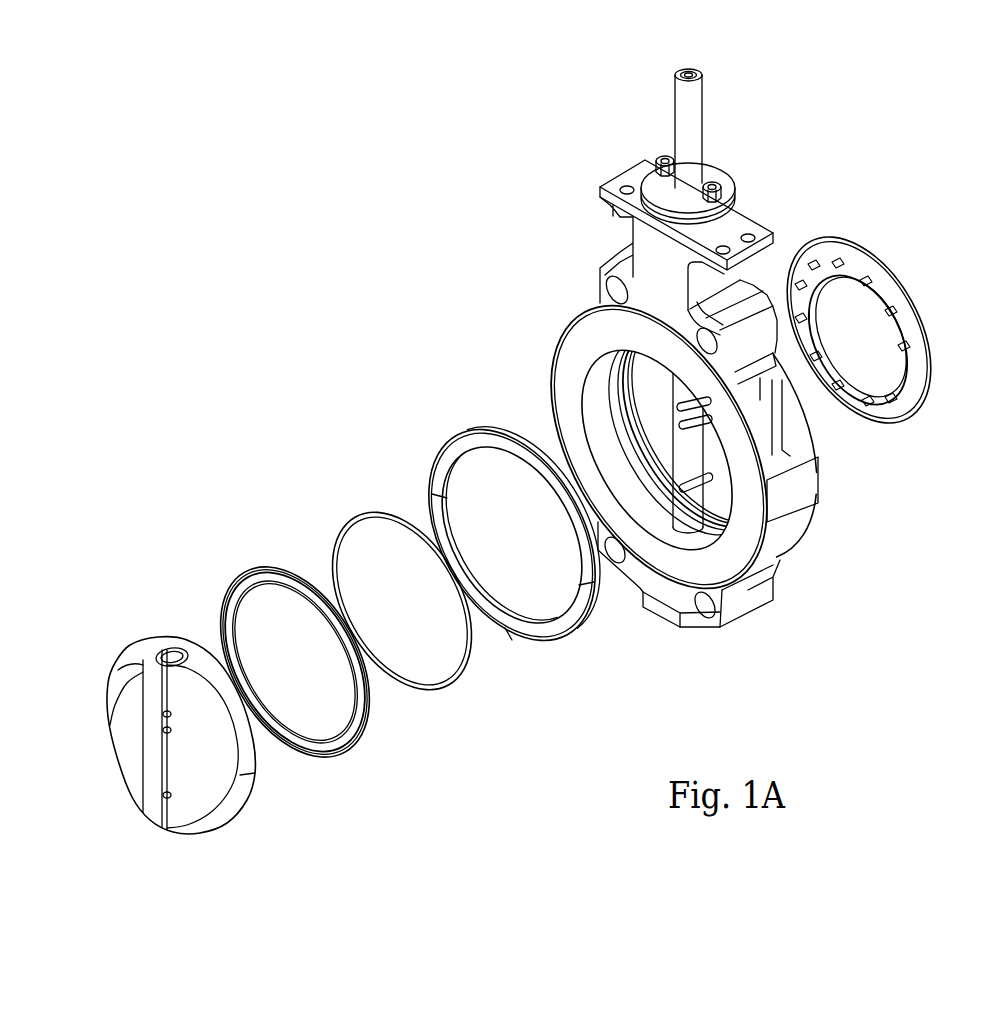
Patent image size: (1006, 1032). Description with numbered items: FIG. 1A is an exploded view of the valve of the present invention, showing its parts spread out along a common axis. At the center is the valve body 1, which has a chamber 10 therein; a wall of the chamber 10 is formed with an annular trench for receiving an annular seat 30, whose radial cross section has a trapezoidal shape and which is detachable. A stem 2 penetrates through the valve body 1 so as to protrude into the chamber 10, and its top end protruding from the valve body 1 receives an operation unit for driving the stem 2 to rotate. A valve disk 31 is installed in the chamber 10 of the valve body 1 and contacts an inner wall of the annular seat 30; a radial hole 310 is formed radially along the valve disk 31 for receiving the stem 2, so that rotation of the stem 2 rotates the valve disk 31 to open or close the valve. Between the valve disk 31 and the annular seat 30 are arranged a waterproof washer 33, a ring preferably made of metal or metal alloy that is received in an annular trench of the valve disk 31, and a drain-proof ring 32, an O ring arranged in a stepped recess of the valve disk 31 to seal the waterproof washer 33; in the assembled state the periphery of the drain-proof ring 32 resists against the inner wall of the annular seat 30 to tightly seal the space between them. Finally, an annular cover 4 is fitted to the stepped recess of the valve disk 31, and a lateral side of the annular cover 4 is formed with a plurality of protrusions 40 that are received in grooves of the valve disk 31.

The valve body 1 is at (805, 520).
The stem 2 is at (693, 102).
The annular cover 4 is at (875, 314).
The protrusions 40 is at (862, 282).
The chamber 10 is at (722, 495).
The annular seat 30 is at (555, 641).
The valve disk 31 is at (216, 740).
The radial hole 310 is at (173, 648).
The drain-proof ring 32 is at (334, 757).
The waterproof washer 33 is at (433, 692).